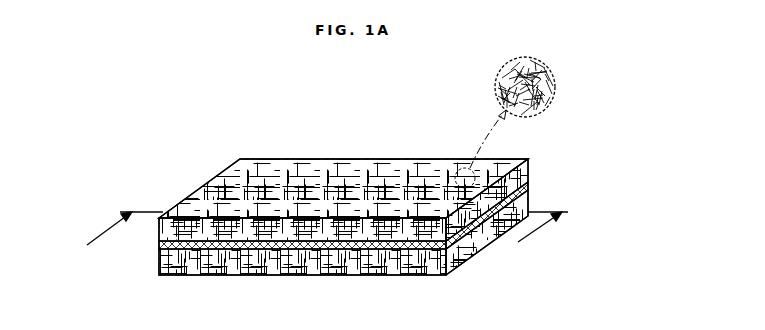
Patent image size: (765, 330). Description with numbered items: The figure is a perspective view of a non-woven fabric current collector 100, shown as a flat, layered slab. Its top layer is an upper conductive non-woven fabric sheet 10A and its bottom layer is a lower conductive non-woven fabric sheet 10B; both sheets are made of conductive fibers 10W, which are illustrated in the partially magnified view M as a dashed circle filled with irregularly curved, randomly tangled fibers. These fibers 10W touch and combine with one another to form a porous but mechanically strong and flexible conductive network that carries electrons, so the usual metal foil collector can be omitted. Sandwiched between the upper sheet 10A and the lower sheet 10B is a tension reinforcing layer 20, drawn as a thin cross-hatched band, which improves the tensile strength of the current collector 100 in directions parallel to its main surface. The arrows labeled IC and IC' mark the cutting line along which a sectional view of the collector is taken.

The non-woven fabric current collector 100 is at (402, 143).
The upper conductive non-woven fabric sheet 10A is at (528, 160).
The lower conductive non-woven fabric sheet 10B is at (468, 258).
The conductive fibers 10W is at (308, 160).
The partially magnified view M is at (543, 65).
The tension reinforcing layer 20 is at (528, 188).
The section line IC-IC' IC is at (120, 238).
The section line IC- IC' is at (537, 238).